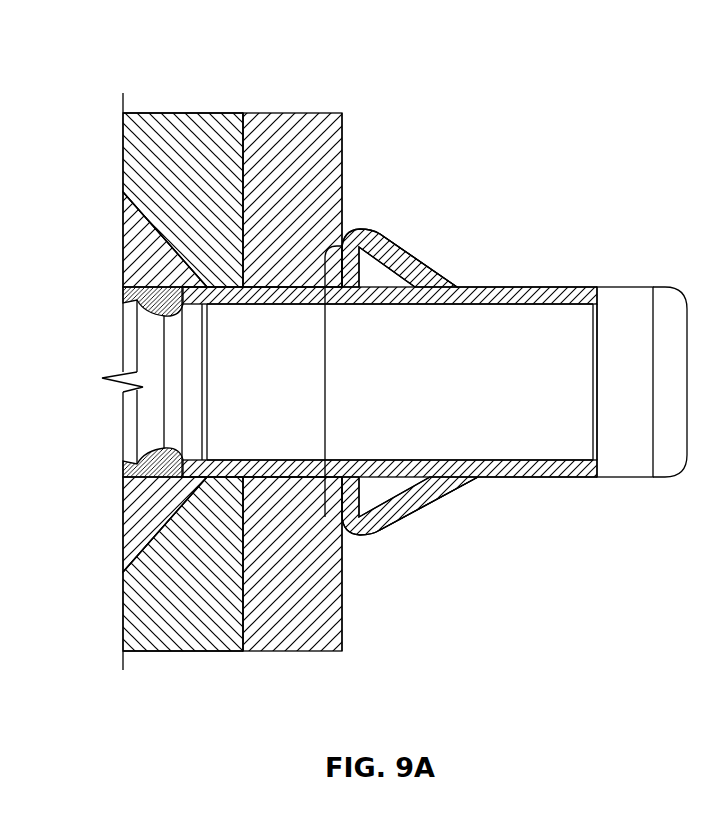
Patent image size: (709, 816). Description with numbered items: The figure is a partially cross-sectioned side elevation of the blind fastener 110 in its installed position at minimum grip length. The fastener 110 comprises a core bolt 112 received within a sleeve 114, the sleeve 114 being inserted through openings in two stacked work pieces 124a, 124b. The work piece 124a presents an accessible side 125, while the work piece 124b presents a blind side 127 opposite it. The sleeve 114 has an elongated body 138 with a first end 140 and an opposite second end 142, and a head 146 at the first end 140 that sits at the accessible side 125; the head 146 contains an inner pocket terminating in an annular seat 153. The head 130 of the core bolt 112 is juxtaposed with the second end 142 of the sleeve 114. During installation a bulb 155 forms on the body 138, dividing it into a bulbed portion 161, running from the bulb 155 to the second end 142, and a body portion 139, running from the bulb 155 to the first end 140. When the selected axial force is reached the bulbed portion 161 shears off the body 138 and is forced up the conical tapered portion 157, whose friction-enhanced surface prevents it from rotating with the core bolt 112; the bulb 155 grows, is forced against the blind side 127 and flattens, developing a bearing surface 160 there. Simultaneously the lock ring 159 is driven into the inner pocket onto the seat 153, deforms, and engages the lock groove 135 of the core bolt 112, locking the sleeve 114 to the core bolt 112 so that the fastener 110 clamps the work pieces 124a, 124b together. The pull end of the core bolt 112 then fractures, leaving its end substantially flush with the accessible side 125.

The blind fastener 110 is at (492, 230).
The core bolt 112 is at (555, 332).
The sleeve 114 is at (302, 300).
The work piece 124a is at (187, 633).
The work piece 124b is at (293, 633).
The accessible side 125 is at (123, 623).
The blind side 127 is at (343, 615).
The head 130 is at (628, 460).
The lock groove 135 is at (150, 333).
The elongated body 138 is at (313, 285).
The body portion 139 is at (270, 478).
The first end 140 is at (122, 237).
The second end 142 is at (550, 470).
The head 146 is at (150, 519).
The annular seat 153 is at (123, 508).
The bulb 155 is at (382, 240).
The tapered portion 157 is at (388, 468).
The lock ring 159 is at (123, 302).
The bearing surface 160 is at (325, 381).
The bulbed portion 161 is at (428, 268).